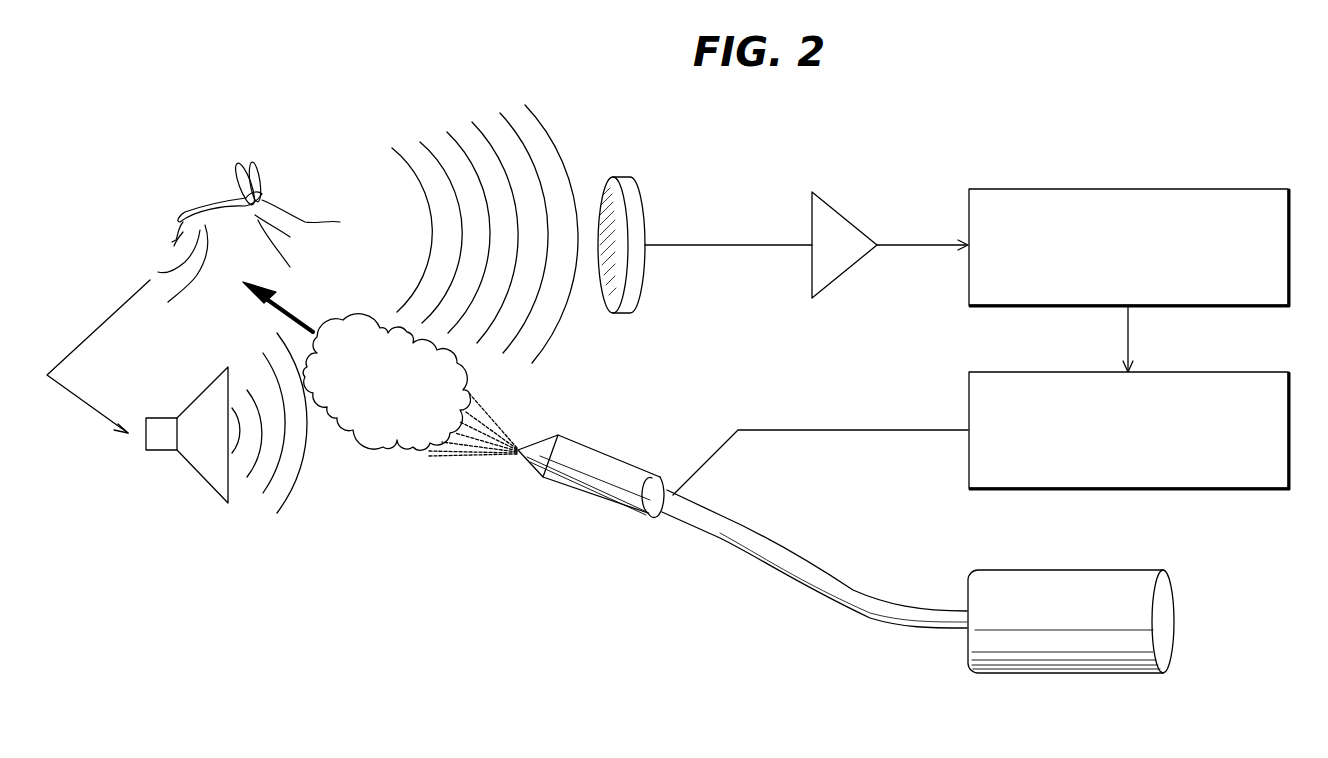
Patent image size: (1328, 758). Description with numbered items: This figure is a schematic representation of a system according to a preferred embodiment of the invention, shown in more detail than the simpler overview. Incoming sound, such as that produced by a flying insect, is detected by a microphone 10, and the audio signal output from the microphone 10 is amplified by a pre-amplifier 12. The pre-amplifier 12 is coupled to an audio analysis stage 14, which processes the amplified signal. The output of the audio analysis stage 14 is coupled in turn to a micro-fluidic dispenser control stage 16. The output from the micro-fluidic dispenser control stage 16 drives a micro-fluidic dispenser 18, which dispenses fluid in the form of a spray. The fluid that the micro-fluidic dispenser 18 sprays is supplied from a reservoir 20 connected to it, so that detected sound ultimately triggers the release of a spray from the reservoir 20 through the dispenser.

The microphone 10 is at (613, 314).
The pre-amplifier 12 is at (845, 275).
The audio analysis stage 14 is at (1235, 189).
The micro-fluidic dispenser control stage 16 is at (1258, 489).
The micro-fluidic dispenser 18 is at (645, 468).
The reservoir 20 is at (1175, 637).